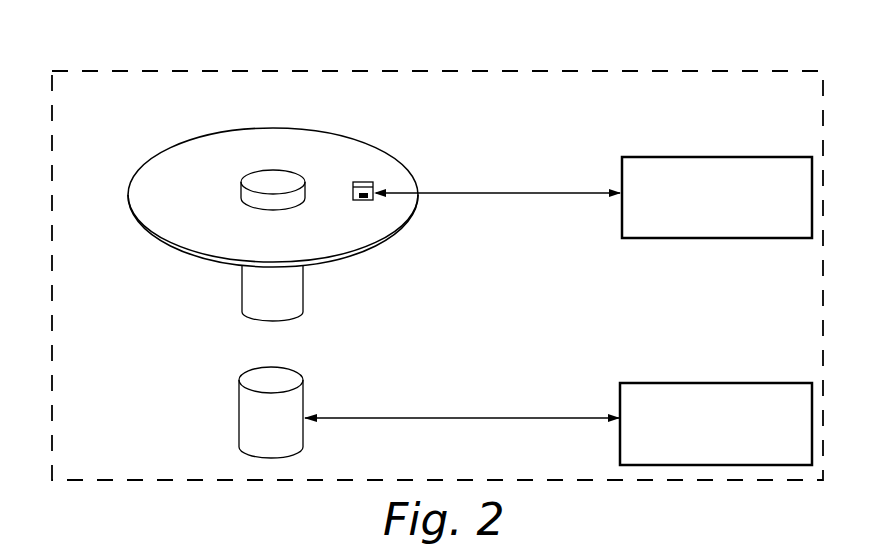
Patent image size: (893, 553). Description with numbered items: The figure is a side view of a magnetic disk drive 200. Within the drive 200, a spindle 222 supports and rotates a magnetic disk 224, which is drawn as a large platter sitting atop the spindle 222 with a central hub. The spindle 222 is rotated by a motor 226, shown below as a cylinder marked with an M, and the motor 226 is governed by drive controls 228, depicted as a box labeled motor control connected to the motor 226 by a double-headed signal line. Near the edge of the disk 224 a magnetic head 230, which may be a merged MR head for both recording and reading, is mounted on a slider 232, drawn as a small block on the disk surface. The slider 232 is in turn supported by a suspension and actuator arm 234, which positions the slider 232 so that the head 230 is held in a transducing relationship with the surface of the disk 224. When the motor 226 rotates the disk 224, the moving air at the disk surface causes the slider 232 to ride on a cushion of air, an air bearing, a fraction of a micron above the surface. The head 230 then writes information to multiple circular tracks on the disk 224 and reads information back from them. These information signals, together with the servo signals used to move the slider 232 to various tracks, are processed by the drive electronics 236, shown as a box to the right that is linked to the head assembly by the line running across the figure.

The magnetic disk drive 200 is at (510, 62).
The spindle 222 is at (241, 285).
The magnetic disk 224 is at (172, 155).
The motor 226 is at (239, 402).
The drive controls 228 is at (733, 383).
The magnetic head 230 is at (366, 200).
The slider 232 is at (363, 182).
The suspension and actuator arm 234 is at (527, 194).
The drive electronics 236 is at (735, 157).